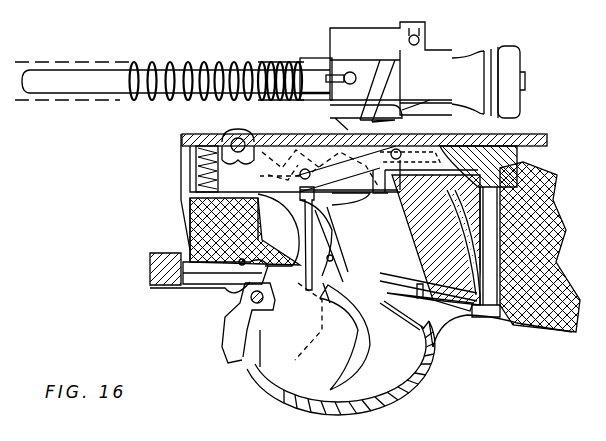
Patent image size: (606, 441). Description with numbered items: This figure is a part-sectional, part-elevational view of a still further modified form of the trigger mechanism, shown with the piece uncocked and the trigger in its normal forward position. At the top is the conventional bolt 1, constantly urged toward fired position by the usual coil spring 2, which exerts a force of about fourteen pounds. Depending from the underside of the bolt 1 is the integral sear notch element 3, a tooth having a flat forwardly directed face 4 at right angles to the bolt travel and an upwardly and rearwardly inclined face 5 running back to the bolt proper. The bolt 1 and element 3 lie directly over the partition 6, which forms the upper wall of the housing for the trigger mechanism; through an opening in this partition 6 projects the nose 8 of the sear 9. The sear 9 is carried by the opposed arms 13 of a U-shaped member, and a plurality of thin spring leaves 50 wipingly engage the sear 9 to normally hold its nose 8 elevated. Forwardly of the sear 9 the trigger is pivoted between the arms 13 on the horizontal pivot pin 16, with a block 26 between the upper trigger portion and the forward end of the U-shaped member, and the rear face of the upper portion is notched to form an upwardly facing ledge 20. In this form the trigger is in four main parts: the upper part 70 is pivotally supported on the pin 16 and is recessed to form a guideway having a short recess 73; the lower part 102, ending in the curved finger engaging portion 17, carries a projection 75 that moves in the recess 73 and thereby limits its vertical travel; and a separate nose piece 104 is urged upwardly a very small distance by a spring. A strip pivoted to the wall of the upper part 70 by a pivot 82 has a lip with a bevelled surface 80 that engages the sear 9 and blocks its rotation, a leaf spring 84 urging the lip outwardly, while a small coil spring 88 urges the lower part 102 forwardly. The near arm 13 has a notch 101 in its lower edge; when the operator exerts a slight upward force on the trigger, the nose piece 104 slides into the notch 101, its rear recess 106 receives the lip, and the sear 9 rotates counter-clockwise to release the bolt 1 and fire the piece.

The bolt 1 is at (509, 48).
The coil spring 2 is at (146, 65).
The sear notch element 3 is at (353, 128).
The flat forwardly directed face 4 is at (322, 124).
The upwardly and rearwardly inclined face 5 is at (405, 128).
The partition 6 is at (280, 136).
The nose of sear 8 is at (402, 50).
The sear 9 is at (360, 196).
The arms of U-shaped member 13 is at (240, 133).
The pivot pin 16 is at (262, 60).
The finger engaging portion 17 is at (343, 342).
The ledge 20 is at (300, 58).
The block 26 is at (185, 156).
The spring leaves 50 is at (446, 142).
The upper part of trigger 70 is at (300, 197).
The recess 73 is at (298, 230).
The projection 75 is at (268, 255).
The inclined surface 80 is at (336, 202).
The pivot 82 is at (334, 261).
The leaf spring 84 is at (314, 232).
The coil spring 88 is at (320, 300).
The notch 101 is at (402, 150).
The lower part of trigger 102 is at (352, 317).
The nose piece 104 is at (305, 300).
The recess 106 is at (300, 206).